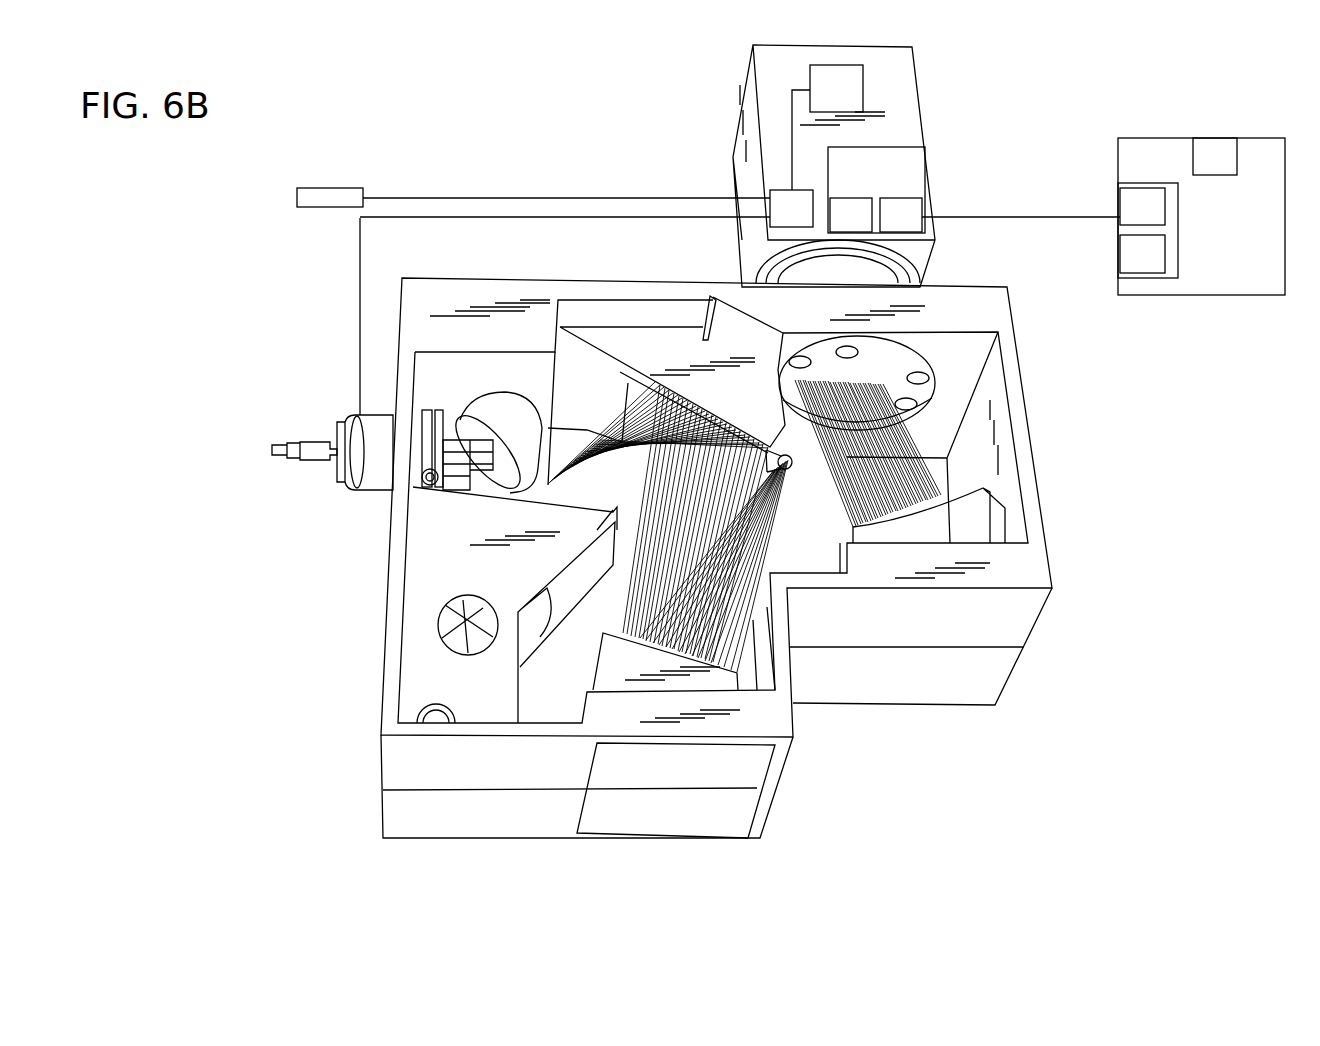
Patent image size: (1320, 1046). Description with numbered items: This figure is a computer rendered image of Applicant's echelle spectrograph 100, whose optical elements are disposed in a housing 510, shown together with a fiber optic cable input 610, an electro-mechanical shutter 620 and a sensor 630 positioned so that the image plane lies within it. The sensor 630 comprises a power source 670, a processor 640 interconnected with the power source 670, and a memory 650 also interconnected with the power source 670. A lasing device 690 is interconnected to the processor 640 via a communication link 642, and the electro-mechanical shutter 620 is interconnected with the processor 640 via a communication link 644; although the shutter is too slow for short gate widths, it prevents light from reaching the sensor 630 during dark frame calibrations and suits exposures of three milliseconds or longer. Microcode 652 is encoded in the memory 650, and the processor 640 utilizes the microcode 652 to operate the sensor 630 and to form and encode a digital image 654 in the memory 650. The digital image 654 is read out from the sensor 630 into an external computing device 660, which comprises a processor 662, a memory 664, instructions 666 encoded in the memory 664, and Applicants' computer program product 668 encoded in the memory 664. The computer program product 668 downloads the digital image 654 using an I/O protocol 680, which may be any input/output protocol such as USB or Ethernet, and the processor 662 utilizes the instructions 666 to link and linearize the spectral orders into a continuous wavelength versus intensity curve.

The echelle spectrograph 100 is at (580, 853).
The housing 510 is at (905, 733).
The fiber optic cable input 610 is at (275, 462).
The electro-mechanical shutter 620 is at (357, 490).
The sensor 630 is at (934, 103).
The processor 640 is at (791, 208).
The communication link 642 is at (505, 198).
The communication link 644 is at (617, 217).
The memory 650 is at (876, 190).
The microcode 652 is at (851, 215).
The digital image 654 is at (901, 215).
The external computing device 660 is at (1189, 303).
The processor 662 is at (1215, 156).
The memory 664 is at (1138, 184).
The instructions 666 is at (1142, 206).
The computer program product 668 is at (1142, 254).
The power source 670 is at (827, 127).
The I/O protocol 680 is at (1010, 217).
The lasing device 690 is at (320, 188).